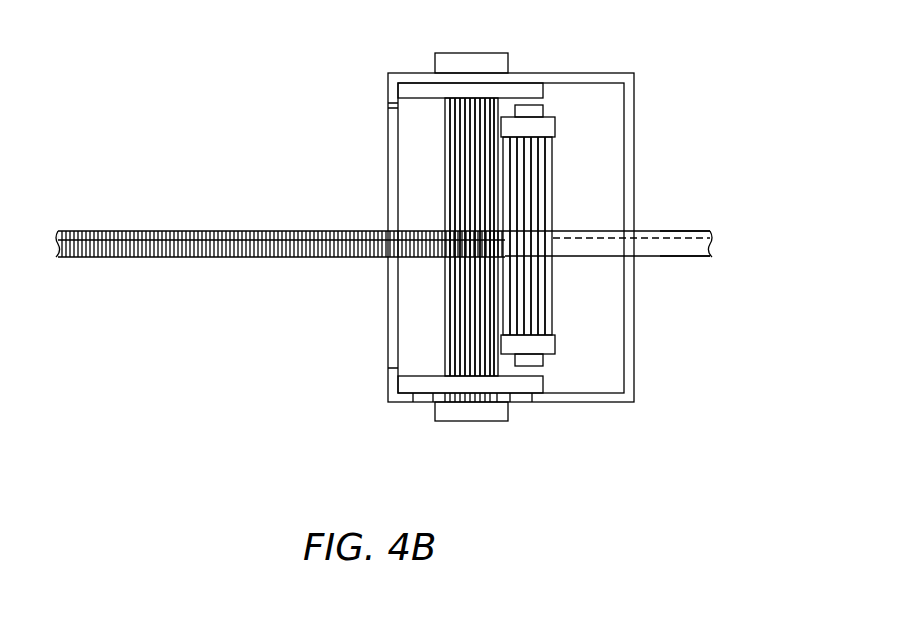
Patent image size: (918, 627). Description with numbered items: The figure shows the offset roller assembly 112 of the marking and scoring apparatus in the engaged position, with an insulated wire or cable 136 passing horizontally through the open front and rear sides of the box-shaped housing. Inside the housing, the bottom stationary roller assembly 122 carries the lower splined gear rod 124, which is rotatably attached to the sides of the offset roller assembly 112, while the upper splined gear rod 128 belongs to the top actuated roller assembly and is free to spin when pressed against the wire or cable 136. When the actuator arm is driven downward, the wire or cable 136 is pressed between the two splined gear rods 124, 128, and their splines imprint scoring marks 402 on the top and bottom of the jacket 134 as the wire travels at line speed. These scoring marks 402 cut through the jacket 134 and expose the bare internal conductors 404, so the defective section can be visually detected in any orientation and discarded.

The offset roller assembly 112 is at (688, 73).
The bottom stationary roller assembly 122 is at (430, 90).
The lower splined gear rod 124 is at (448, 143).
The upper splined gear rod 128 is at (553, 175).
The jacket 134 is at (580, 248).
The wire or cable 136 is at (835, 243).
The scoring marks 402 is at (260, 230).
The exposed bare internal conductors 404 is at (145, 232).